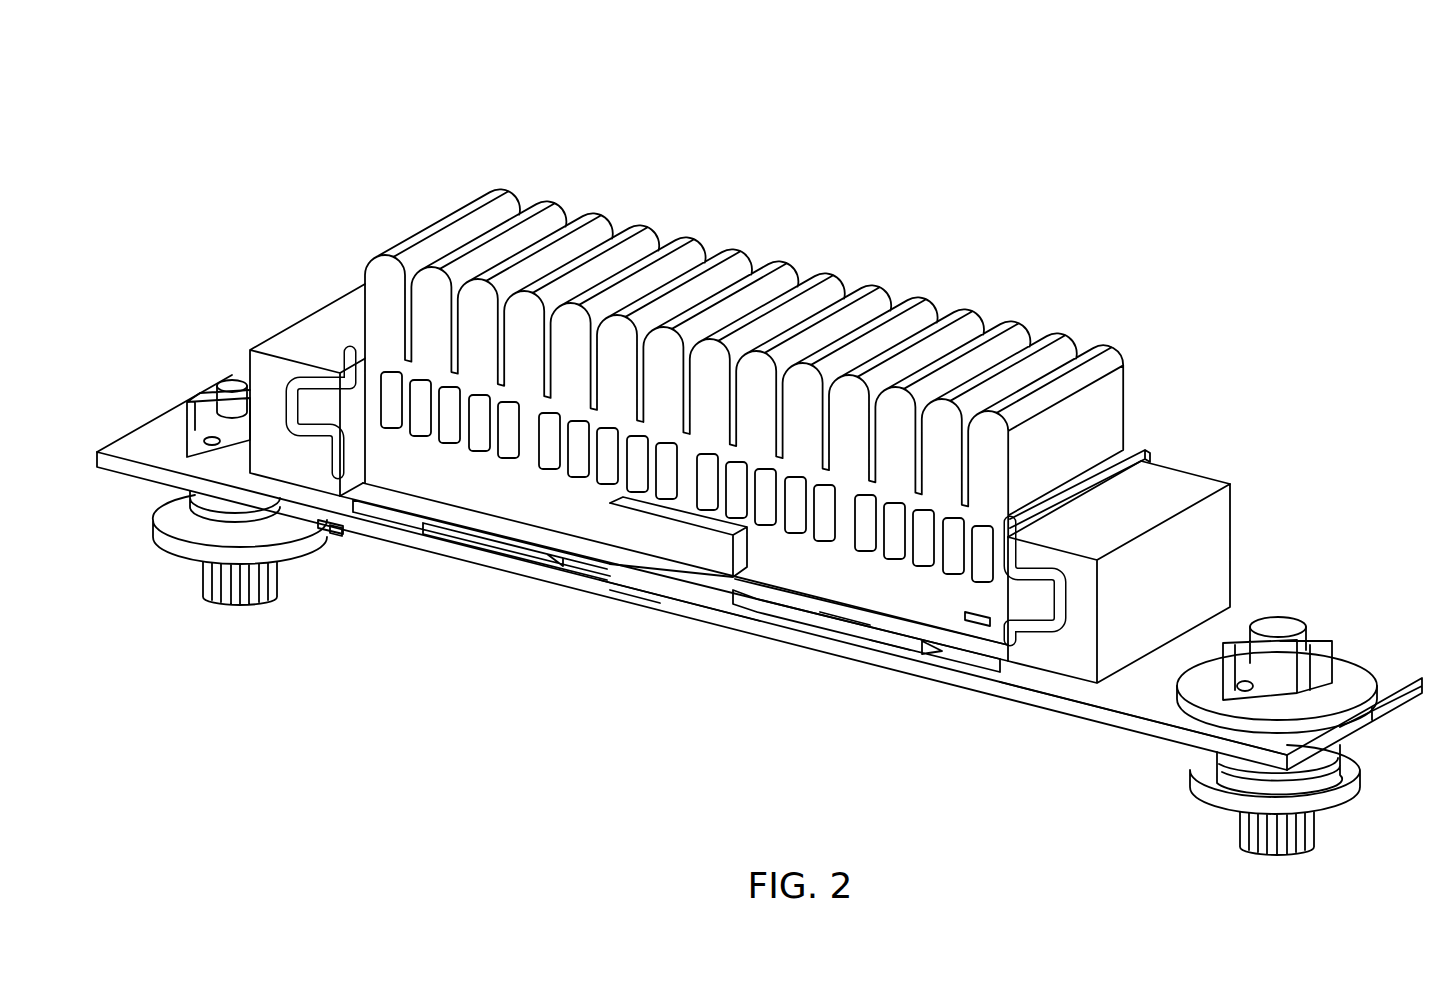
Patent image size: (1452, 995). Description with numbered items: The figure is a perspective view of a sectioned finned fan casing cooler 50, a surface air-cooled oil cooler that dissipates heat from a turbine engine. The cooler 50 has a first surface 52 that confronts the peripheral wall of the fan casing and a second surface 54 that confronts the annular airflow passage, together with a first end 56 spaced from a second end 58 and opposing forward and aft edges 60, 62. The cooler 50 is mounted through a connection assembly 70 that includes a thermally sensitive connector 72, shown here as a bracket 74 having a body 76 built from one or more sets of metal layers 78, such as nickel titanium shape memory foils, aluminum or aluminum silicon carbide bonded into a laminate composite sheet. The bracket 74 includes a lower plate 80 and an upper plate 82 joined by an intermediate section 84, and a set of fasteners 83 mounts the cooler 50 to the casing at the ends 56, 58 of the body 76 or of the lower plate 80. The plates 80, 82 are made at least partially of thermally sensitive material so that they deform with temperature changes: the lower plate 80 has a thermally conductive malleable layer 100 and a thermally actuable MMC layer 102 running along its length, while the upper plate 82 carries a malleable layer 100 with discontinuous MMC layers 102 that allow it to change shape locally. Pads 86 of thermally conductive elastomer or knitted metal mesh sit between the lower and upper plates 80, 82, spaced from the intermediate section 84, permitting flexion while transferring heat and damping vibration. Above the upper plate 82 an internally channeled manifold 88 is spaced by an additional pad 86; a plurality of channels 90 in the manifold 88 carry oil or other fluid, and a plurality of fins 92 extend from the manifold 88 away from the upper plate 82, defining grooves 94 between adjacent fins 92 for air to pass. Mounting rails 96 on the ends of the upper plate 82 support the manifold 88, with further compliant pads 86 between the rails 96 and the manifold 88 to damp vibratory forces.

The fan casing cooler 50 is at (276, 155).
The first surface 52 is at (645, 618).
The second surface 54 is at (1225, 635).
The first end 56 is at (1395, 675).
The second end 58 is at (170, 420).
The forward edge 60 is at (890, 632).
The aft edge 62 is at (1170, 468).
The connection assembly 70 is at (184, 388).
The thermally sensitive connector 72 is at (146, 442).
The bracket 74 is at (1154, 718).
The body 76 is at (709, 607).
The metal layers 78 is at (405, 536).
The lower plate 80 is at (447, 547).
The upper plate 82 is at (840, 622).
The fasteners 83 is at (166, 542).
The intermediate section 84 is at (680, 548).
The pads 86 is at (345, 345).
The internally channeled manifold 88 is at (992, 499).
The channels 90 is at (480, 405).
The fins 92 is at (772, 400).
The grooves 94 is at (688, 385).
The mounting rails 96 is at (282, 333).
The malleable layer 100 is at (352, 340).
The MMC layer 102 is at (328, 528).